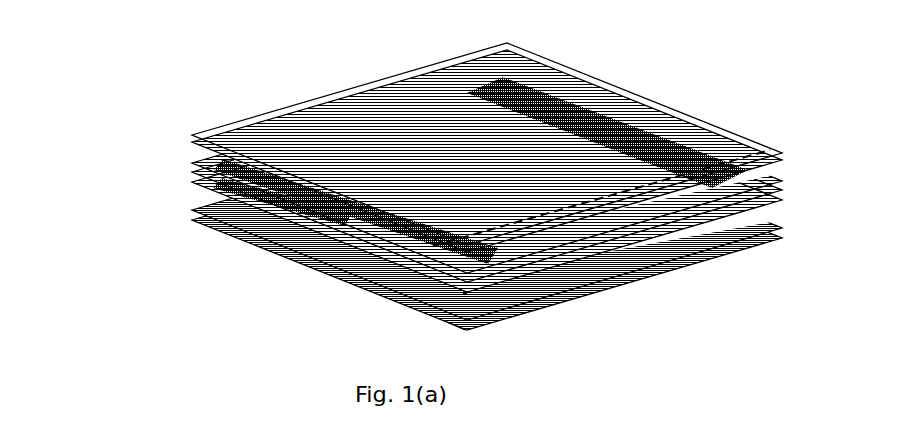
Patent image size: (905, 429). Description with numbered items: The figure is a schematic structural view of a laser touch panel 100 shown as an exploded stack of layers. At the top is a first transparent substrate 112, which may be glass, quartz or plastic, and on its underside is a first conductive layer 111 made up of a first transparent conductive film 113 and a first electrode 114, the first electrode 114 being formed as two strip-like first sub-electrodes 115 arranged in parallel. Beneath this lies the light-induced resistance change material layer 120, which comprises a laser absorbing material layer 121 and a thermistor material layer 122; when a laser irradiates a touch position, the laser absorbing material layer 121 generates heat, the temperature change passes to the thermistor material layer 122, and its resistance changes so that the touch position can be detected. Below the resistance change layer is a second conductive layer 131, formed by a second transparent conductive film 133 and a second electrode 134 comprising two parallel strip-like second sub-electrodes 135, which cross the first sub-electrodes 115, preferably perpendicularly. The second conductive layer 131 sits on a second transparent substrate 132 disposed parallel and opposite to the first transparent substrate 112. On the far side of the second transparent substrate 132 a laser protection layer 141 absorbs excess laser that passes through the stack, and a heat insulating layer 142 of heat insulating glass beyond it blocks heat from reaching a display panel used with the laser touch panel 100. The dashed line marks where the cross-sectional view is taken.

The laser touch panel 100 is at (405, 187).
The first conductive layer 111 is at (405, 157).
The first transparent substrate 112 is at (185, 35).
The first transparent conductive film 113 is at (427, 151).
The first electrode 114 is at (410, 132).
The first sub-electrode 115 is at (221, 160).
The light-induced resistance change material layer 120 is at (405, 176).
The laser absorbing material layer 121 is at (68, 188).
The thermistor material layer 122 is at (427, 181).
The second conductive layer 131 is at (405, 191).
The second transparent substrate 132 is at (415, 323).
The second transparent conductive film 133 is at (68, 238).
The second electrode 134 is at (212, 209).
The second sub-electrode 135 is at (282, 202).
The laser protection layer 141 is at (430, 219).
The heat insulating layer 142 is at (430, 229).